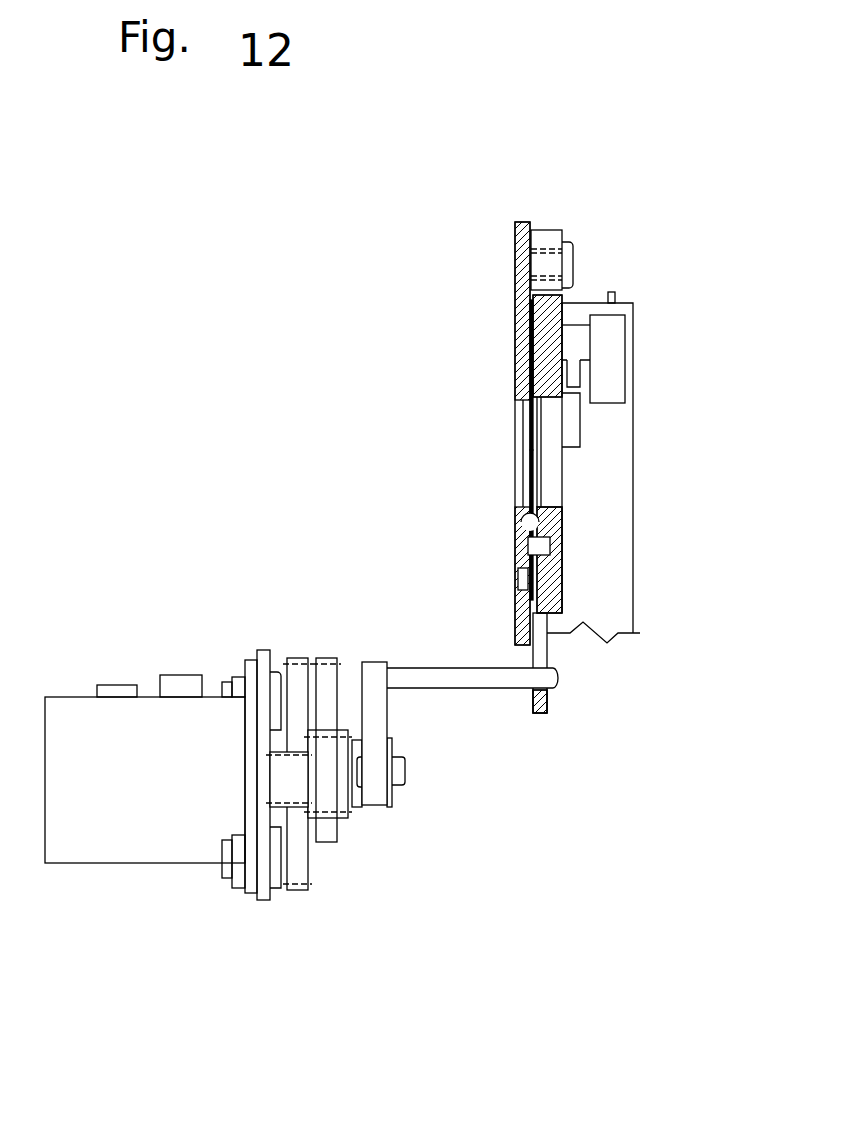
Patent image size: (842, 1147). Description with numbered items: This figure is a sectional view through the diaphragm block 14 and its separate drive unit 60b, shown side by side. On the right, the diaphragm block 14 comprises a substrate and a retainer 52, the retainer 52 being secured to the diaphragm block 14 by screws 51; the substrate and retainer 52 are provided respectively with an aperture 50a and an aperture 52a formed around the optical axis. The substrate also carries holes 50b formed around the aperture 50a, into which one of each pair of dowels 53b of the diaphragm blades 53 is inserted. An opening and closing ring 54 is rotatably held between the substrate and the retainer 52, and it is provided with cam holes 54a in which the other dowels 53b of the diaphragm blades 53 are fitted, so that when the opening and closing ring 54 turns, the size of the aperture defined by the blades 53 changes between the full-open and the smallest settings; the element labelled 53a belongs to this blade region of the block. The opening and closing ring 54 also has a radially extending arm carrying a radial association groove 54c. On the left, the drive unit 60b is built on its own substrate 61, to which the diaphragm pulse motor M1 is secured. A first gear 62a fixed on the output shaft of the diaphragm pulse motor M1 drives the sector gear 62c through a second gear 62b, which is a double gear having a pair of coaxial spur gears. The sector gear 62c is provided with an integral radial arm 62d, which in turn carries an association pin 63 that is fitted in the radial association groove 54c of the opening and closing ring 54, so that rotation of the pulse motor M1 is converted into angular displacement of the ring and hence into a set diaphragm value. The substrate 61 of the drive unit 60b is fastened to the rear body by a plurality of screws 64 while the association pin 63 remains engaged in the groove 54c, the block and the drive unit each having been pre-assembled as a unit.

The diaphragm block 14 is at (489, 229).
The screws 51 is at (565, 272).
The retainer 52 is at (565, 332).
The aperture 52a is at (552, 400).
The diaphragm blades 53 is at (530, 445).
The slide window 53a is at (520, 592).
The dowels 53b is at (555, 546).
The opening and closing ring 54 is at (530, 336).
The cam holes 54a is at (540, 500).
The radial association groove 54c is at (540, 714).
The aperture 50a is at (530, 405).
The holes 50b is at (520, 585).
The association pin 63 is at (470, 690).
The diaphragm pulse motor M1 is at (140, 848).
The screws 64 is at (275, 860).
The substrate 61 is at (258, 660).
The first gear 62a is at (292, 783).
The second gear 62b is at (328, 787).
The sector gear 62c is at (322, 687).
The radial arm 62d is at (370, 678).
The drive unit 60b is at (395, 868).